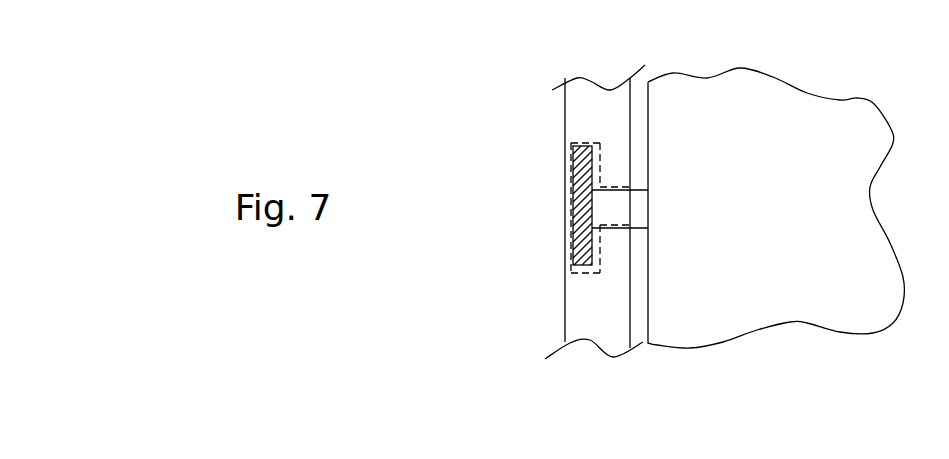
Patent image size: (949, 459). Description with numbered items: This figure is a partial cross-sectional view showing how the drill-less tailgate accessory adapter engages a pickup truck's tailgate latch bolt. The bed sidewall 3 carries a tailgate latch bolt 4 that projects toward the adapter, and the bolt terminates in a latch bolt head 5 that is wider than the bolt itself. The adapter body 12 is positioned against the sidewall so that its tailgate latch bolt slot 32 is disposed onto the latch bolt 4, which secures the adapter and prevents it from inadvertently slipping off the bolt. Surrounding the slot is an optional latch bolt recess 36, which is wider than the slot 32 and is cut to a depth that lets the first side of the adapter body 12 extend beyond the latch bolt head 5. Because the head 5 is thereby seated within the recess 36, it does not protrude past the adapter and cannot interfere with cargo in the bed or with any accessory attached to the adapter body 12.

The bed sidewall 3 is at (746, 222).
The tailgate latch bolt 4 is at (641, 222).
The latch bolt head 5 is at (582, 203).
The adapter body 12 is at (610, 312).
The tailgate latch bolt slot 32 is at (622, 187).
The latch bolt recess 36 is at (582, 275).